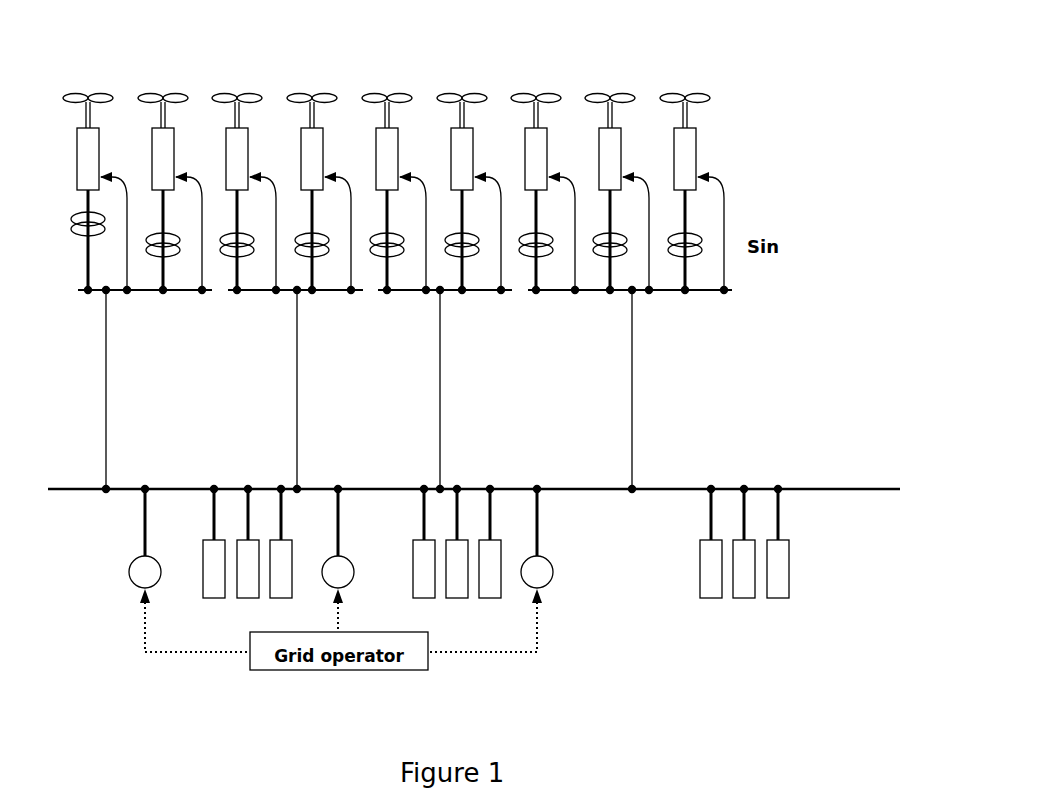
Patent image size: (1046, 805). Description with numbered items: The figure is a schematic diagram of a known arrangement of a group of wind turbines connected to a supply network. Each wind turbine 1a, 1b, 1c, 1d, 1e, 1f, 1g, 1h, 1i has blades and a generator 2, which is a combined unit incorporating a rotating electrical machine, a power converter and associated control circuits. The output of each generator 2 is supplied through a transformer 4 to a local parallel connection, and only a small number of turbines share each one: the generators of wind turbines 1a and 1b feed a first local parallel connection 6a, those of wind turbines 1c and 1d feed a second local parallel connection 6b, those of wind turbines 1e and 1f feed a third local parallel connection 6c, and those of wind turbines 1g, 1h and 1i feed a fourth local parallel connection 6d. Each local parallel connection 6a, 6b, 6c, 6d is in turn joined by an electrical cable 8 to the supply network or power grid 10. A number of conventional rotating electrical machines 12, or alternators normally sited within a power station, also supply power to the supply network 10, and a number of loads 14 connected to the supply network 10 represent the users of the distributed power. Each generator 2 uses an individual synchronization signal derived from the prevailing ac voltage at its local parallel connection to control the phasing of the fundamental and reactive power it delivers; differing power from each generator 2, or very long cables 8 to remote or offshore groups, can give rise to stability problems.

The wind turbine 1a is at (83, 82).
The wind turbine 1b is at (158, 82).
The wind turbine 1c is at (232, 82).
The wind turbine 1d is at (307, 82).
The wind turbine 1e is at (382, 82).
The wind turbine 1f is at (457, 82).
The wind turbine 1g is at (531, 82).
The wind turbine 1h is at (605, 82).
The wind turbine 1i is at (680, 82).
The generator 2 is at (83, 153).
The transformer 4 is at (85, 217).
The first local parallel connection 6a is at (147, 292).
The second local parallel connection 6b is at (325, 292).
The third local parallel connection 6c is at (478, 292).
The fourth local parallel connection 6d is at (698, 292).
The electrical cable 8 is at (106, 382).
The supply network 10 is at (678, 489).
The conventional rotating electrical machine 12 is at (130, 563).
The load 14 is at (772, 583).